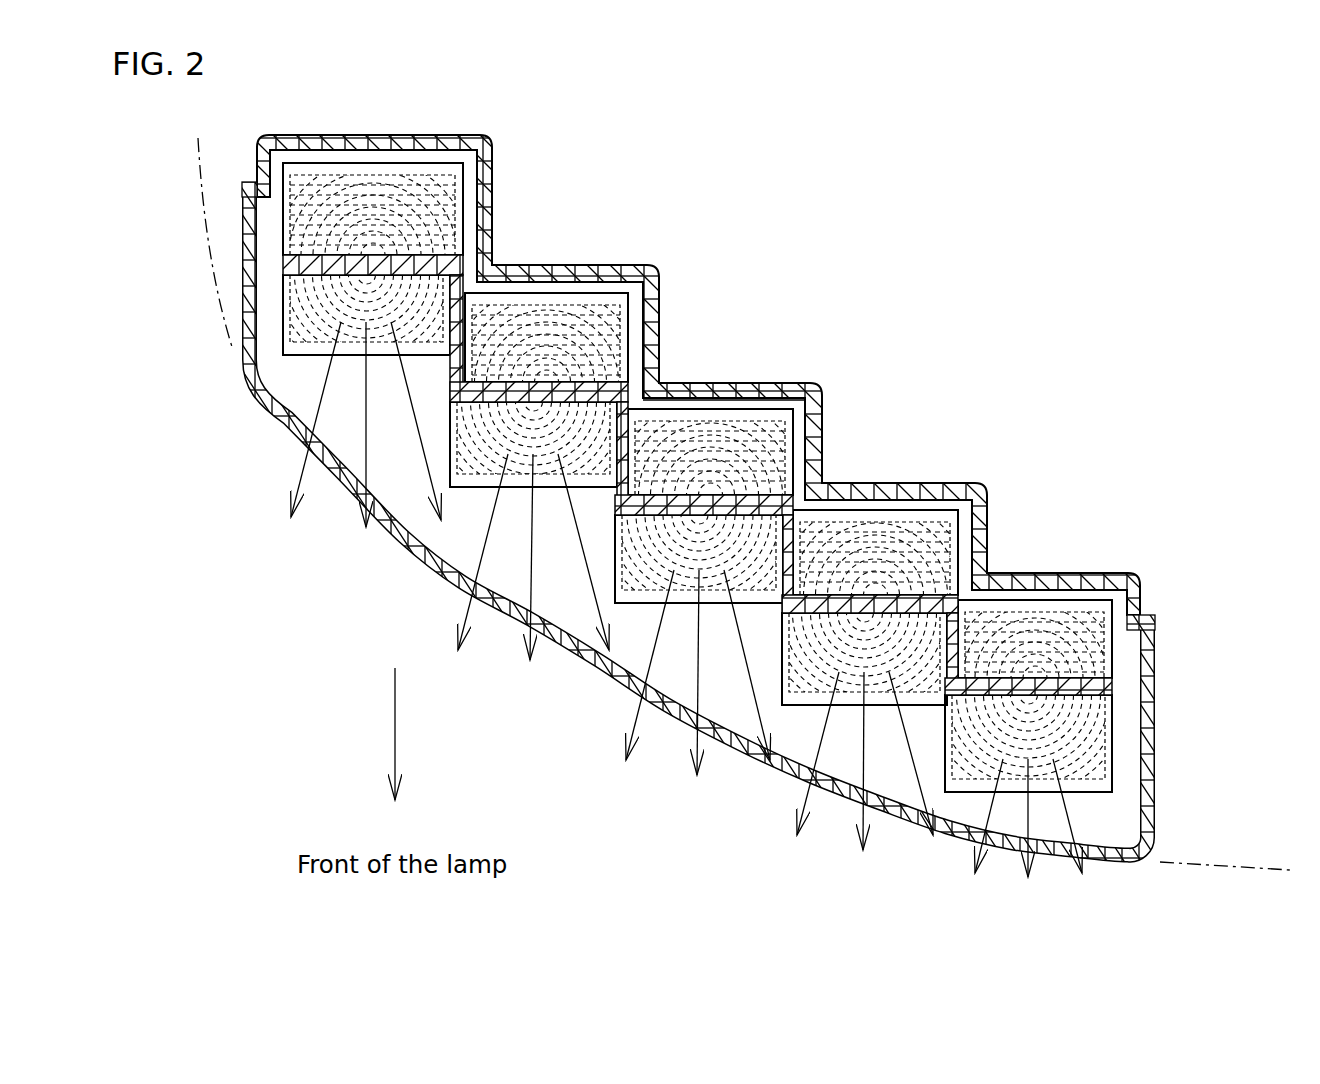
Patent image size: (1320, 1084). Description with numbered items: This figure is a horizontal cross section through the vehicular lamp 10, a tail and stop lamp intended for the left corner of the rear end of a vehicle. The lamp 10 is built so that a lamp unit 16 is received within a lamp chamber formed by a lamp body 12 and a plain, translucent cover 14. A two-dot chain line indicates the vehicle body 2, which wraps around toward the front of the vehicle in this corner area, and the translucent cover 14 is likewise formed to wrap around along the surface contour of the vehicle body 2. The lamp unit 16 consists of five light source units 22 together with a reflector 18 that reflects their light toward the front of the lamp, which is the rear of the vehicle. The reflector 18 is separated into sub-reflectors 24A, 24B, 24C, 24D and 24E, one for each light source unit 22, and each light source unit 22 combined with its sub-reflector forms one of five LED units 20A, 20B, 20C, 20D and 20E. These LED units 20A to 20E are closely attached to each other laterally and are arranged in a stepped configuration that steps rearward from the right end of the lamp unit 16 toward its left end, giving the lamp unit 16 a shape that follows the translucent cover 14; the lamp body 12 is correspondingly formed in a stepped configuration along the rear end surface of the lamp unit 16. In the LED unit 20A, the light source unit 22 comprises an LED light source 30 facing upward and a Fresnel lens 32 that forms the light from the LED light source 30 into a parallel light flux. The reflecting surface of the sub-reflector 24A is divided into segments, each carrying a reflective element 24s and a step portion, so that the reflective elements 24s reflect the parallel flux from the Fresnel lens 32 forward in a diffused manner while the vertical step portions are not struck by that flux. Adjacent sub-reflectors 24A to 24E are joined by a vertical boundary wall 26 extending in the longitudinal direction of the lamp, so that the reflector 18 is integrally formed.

The vehicle body 2 is at (207, 255).
The vehicular lamp 10 is at (1003, 278).
The lamp body 12 is at (827, 403).
The translucent cover 14 is at (400, 530).
The lamp unit 16 is at (632, 632).
The reflector 18 is at (718, 410).
The LED unit 20A is at (1028, 690).
The LED unit 20B is at (803, 638).
The LED unit 20C is at (644, 543).
The LED unit 20D is at (487, 443).
The LED unit 20E is at (372, 339).
The light source unit 22 is at (1102, 797).
The sub-reflector 24A is at (1109, 631).
The sub-reflector 24B is at (892, 540).
The sub-reflector 24C is at (737, 442).
The sub-reflector 24D is at (578, 328).
The sub-reflector 24E is at (428, 218).
The reflective element 24s is at (1117, 658).
The vertical boundary wall 26 is at (462, 322).
The LED light source 30 is at (1113, 725).
The Fresnel lens 32 is at (1093, 750).